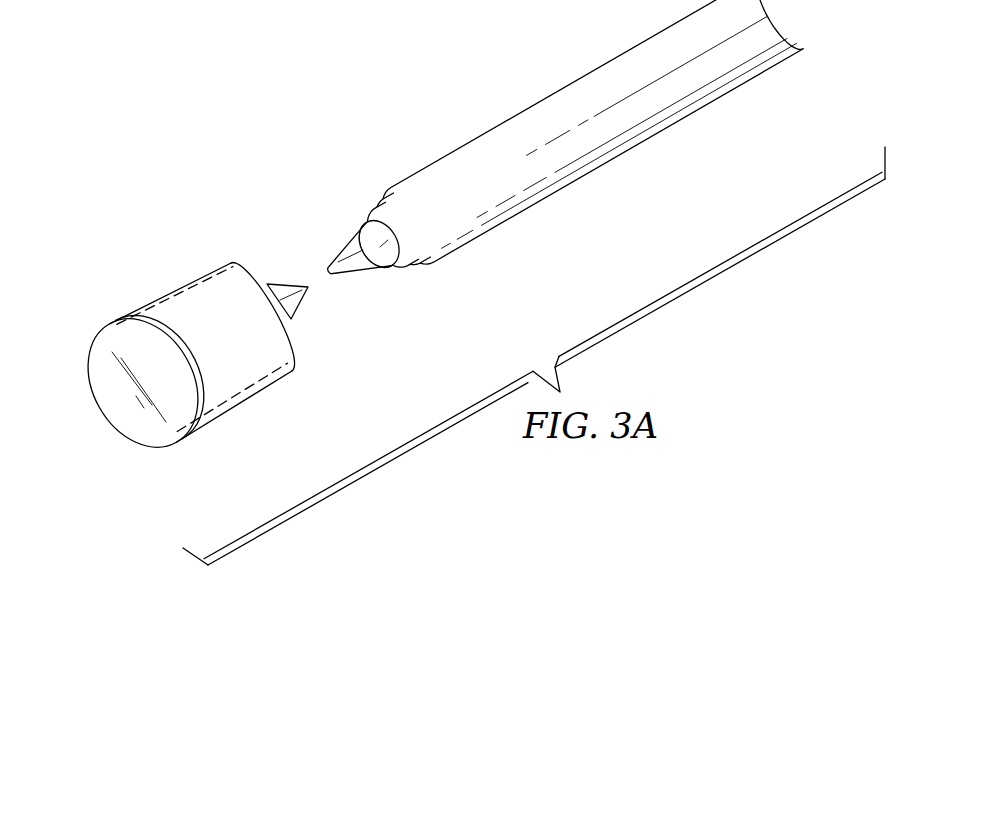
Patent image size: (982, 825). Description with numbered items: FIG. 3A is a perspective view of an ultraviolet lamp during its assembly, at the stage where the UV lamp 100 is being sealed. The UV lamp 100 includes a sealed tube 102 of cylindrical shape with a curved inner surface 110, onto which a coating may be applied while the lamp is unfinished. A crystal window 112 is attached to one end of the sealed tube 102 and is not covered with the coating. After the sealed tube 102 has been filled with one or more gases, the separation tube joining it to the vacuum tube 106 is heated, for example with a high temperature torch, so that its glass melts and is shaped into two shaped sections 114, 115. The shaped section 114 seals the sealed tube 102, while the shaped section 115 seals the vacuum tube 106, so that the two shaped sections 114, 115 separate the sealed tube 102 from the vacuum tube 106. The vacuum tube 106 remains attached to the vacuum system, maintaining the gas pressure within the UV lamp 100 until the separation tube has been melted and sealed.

The UV lamp 100 is at (425, 236).
The sealed tube 102 is at (215, 360).
The vacuum tube 106 is at (538, 137).
The inner surface 110 is at (197, 287).
The crystal window 112 is at (137, 418).
The shaped section 114 is at (302, 306).
The shaped section 115 is at (348, 248).